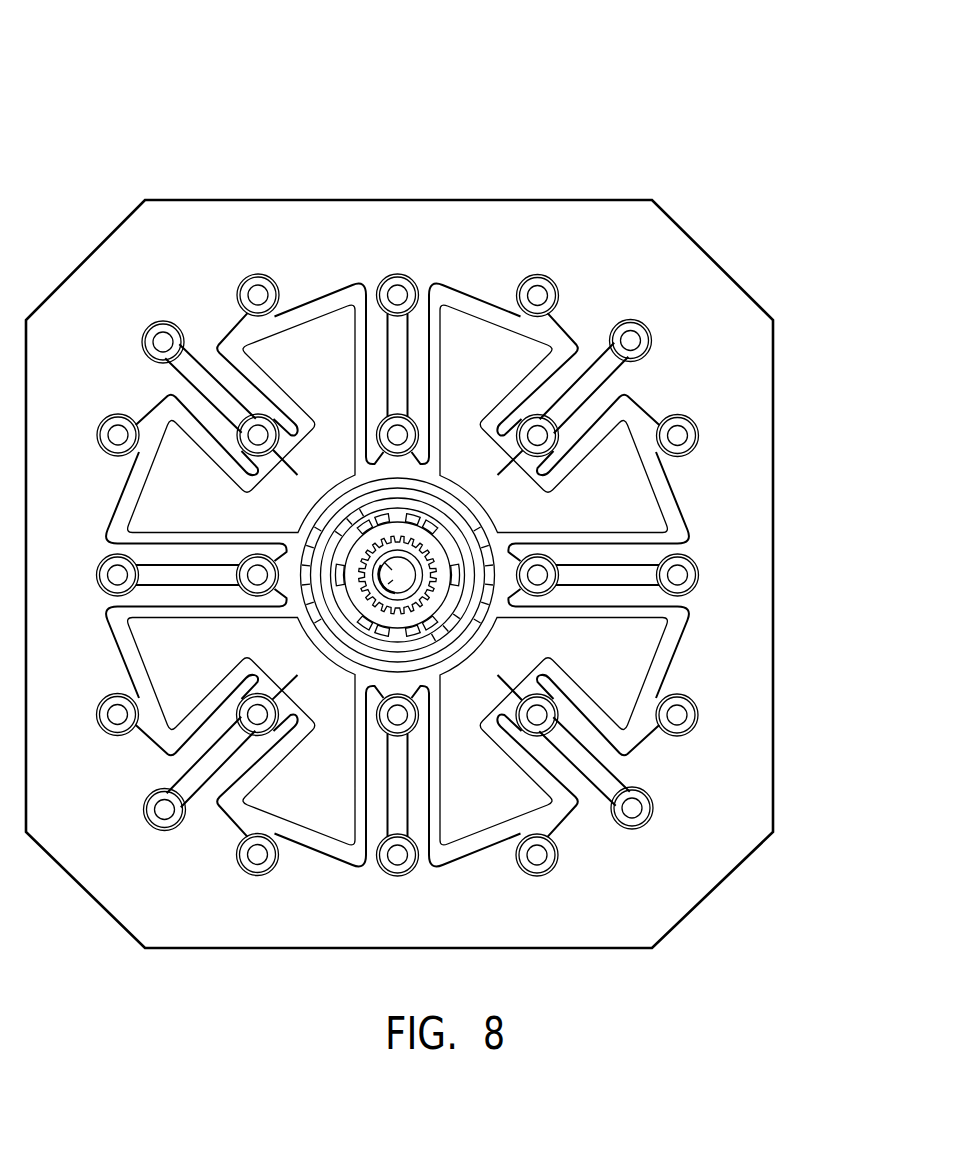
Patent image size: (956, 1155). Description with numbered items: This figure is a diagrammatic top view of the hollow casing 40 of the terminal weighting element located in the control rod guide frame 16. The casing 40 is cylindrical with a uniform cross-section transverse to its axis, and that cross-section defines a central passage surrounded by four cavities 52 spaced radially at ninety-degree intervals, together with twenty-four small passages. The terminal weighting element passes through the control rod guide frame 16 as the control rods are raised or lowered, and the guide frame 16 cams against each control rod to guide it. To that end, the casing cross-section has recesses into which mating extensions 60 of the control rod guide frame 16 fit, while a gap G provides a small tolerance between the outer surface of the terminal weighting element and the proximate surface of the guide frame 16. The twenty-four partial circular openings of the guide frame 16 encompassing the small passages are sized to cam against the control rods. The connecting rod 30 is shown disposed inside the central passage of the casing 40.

The control rod guide frame 16 is at (165, 200).
The gap G is at (292, 305).
The hollow casing 40 is at (317, 305).
The mating extensions 60 is at (150, 598).
The cavities 52 is at (501, 676).
The connecting rod 30 is at (412, 571).